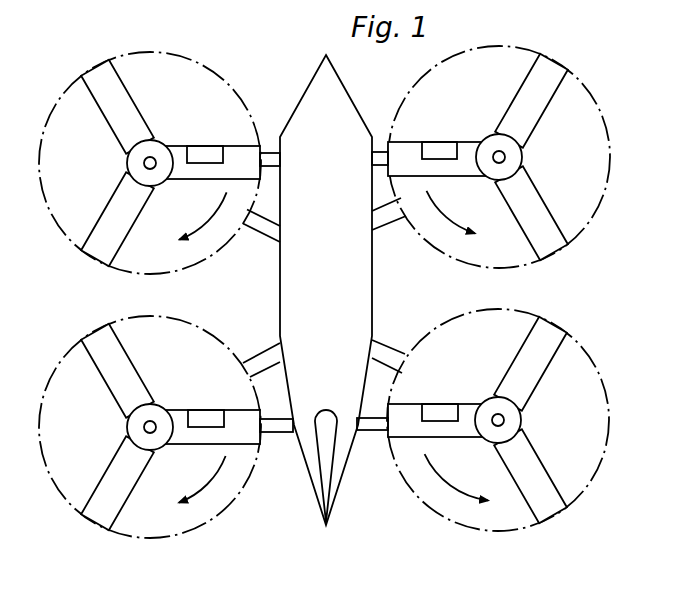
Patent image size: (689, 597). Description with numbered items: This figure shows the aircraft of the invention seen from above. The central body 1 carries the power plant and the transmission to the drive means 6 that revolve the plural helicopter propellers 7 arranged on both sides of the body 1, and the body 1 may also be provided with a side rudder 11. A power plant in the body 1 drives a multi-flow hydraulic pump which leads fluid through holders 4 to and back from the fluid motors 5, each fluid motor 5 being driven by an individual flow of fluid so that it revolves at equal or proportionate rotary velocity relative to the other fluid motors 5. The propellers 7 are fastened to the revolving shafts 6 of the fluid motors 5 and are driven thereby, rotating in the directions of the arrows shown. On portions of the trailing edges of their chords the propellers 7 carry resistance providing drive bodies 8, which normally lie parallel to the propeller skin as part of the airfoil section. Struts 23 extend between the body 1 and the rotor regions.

The body 1 is at (311, 203).
The holder 4 is at (271, 155).
The fluid motor 5 is at (142, 173).
The revolving shaft 6 is at (142, 163).
The propeller 7 is at (118, 100).
The drive body 8 is at (203, 150).
The side rudder 11 is at (325, 458).
The strut 23 is at (263, 227).